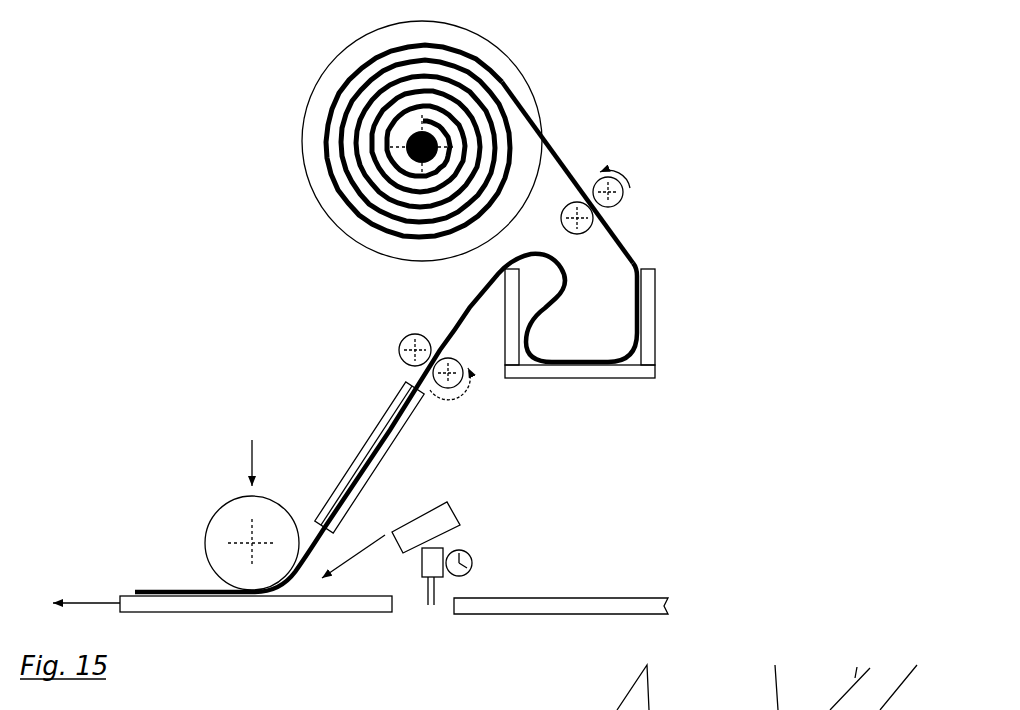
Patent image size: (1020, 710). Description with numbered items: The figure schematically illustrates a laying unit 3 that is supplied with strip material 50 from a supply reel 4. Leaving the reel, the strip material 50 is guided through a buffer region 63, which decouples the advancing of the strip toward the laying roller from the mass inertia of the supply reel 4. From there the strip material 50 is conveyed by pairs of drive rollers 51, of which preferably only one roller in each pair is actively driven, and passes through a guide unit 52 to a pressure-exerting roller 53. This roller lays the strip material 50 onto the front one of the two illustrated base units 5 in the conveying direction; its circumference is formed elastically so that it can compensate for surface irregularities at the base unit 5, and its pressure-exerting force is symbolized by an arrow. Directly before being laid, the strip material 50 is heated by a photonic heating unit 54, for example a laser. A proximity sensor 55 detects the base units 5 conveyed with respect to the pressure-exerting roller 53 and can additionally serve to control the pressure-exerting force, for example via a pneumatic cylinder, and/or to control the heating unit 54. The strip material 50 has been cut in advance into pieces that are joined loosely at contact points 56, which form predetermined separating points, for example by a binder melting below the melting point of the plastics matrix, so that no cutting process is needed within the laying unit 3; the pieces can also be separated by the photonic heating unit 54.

The laying unit 3 is at (315, 382).
The supply reel 4 is at (318, 107).
The base unit 5 is at (318, 612).
The strip material 50 is at (467, 57).
The drive rollers 51 is at (620, 188).
The guide unit 52 is at (398, 436).
The pressure-exerting roller 53 is at (222, 512).
The photonic heating unit 54 is at (455, 512).
The proximity sensor 55 is at (419, 608).
The contact points 56 is at (568, 158).
The buffer region 63 is at (672, 315).